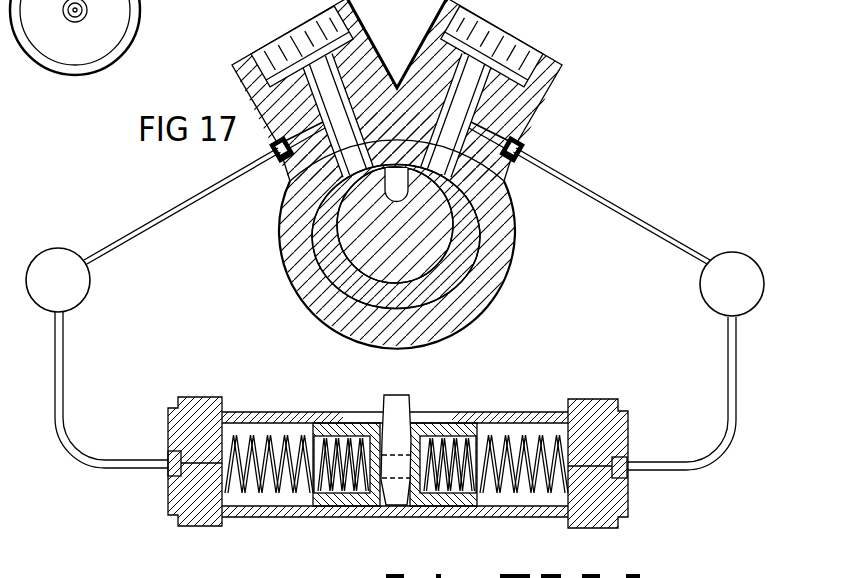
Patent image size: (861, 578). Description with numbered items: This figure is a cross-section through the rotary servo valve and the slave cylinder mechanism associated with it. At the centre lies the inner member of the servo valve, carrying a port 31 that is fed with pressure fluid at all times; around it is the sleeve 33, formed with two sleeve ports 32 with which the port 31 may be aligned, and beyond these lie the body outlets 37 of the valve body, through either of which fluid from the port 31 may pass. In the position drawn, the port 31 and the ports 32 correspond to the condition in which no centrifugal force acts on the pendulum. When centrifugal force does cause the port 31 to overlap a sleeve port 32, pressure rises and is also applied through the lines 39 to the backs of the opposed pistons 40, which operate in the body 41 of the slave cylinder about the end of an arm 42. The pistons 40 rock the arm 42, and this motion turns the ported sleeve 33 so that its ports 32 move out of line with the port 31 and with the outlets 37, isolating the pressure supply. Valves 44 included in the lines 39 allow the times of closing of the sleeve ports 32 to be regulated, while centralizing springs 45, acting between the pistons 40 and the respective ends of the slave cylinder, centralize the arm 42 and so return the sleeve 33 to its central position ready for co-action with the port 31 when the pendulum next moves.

The port 31 is at (397, 178).
The sleeve ports 32 is at (338, 156).
The sleeve 33 is at (467, 258).
The body outlets 37 is at (300, 34).
The lines 39 is at (63, 335).
The opposed pistons 40 is at (357, 506).
The body of slave cylinder 41 is at (423, 517).
The arm 42 is at (388, 440).
The valves 44 is at (88, 283).
The centralizing springs 45 is at (288, 492).